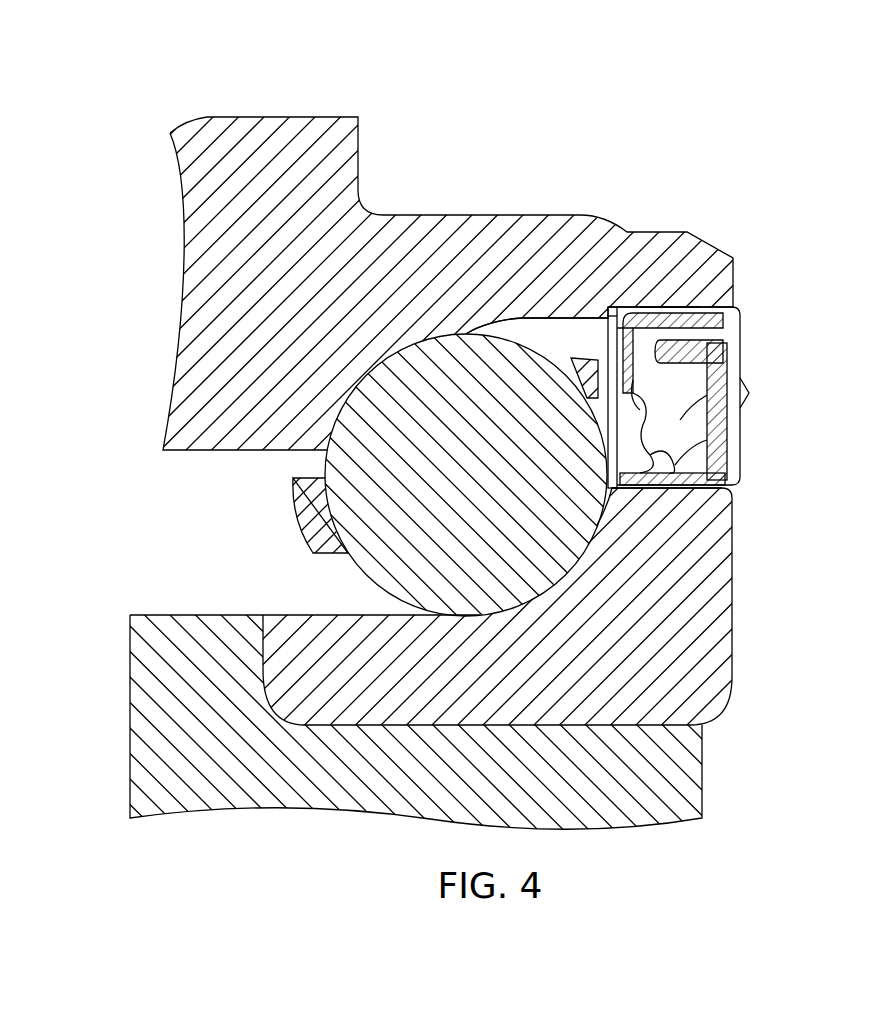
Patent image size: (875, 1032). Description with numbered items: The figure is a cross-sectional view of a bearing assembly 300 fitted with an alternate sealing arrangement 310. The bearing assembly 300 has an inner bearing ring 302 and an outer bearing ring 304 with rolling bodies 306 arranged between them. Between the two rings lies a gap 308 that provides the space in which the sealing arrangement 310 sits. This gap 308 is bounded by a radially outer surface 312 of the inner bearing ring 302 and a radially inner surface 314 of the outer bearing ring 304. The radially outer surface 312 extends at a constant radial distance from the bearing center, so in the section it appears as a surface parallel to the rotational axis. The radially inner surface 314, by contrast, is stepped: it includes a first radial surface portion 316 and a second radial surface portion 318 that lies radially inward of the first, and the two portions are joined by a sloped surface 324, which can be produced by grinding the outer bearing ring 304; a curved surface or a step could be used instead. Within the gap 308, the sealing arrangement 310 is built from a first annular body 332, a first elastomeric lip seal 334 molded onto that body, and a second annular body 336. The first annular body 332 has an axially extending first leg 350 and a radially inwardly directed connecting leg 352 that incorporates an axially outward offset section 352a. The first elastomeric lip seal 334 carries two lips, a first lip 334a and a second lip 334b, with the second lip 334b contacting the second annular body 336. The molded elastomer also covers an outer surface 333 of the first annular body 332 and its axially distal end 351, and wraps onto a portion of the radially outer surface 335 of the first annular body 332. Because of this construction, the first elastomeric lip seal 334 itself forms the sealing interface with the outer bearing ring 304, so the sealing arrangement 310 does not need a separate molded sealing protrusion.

The bearing assembly 300 is at (130, 122).
The inner bearing ring 302 is at (415, 675).
The outer bearing ring 304 is at (259, 274).
The rolling bodies 306 is at (449, 482).
The gap 308 is at (613, 347).
The sealing arrangement 310 is at (749, 393).
The radially outer surface 312 is at (665, 485).
The radially inner surface 314 is at (720, 307).
The first radial surface portion 316 is at (662, 310).
The second radial surface portion 318 is at (543, 317).
The sloped surface 324 is at (623, 313).
The first annular body 332 is at (612, 440).
The outer surface 333 is at (690, 338).
The first elastomeric lip seal 334 is at (632, 445).
The first lip 334a is at (648, 483).
The second lip 334b is at (700, 410).
The radially outer surface 335 is at (665, 307).
The second annular body 336 is at (723, 483).
The first leg 350 is at (700, 317).
The axially distal end 351 is at (717, 323).
The connecting leg 352 is at (627, 375).
The axially outward offset section 352a is at (700, 443).